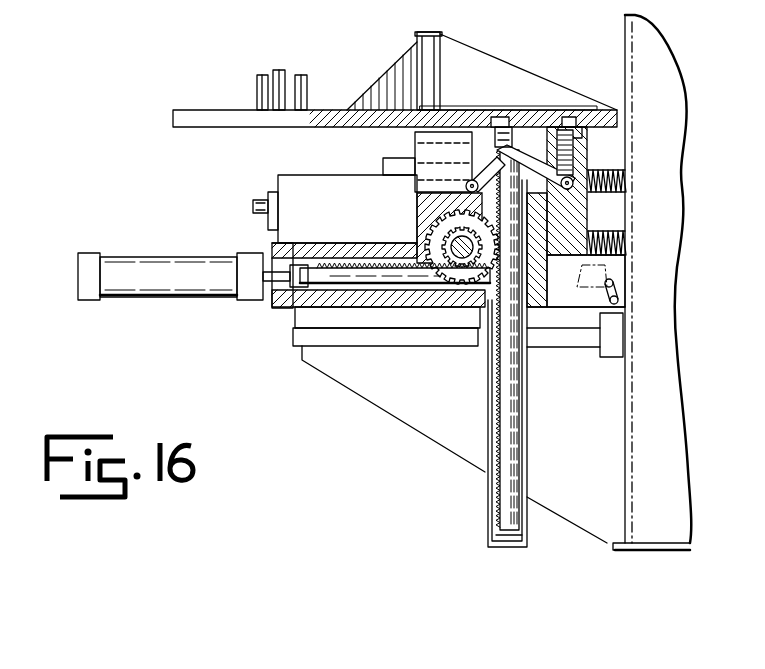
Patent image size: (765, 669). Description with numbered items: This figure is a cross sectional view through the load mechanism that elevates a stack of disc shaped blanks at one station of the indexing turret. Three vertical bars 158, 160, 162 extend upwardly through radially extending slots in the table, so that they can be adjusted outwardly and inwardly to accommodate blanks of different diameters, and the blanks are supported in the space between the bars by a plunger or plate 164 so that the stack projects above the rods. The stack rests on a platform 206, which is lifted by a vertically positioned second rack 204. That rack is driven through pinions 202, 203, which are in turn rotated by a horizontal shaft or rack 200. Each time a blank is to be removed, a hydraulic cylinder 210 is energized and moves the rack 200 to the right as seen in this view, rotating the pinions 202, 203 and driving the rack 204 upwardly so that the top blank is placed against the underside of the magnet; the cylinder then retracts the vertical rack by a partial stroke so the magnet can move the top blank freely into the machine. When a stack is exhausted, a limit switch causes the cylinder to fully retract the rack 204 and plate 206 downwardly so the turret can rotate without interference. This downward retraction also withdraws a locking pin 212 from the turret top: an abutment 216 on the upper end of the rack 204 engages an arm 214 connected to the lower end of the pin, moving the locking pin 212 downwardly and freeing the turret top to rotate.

The vertical bar 158 is at (303, 82).
The vertical bar 160 is at (282, 72).
The vertical bar 162 is at (257, 87).
The plunger or plate 164 is at (517, 110).
The shaft or rack 200 is at (396, 283).
The pinion 202 is at (422, 248).
The pinion 203 is at (425, 218).
The second rack 204 is at (510, 383).
The platform 206 is at (533, 110).
The hydraulic cylinder 210 is at (167, 262).
The locking pin 212 is at (573, 148).
The arm 214 is at (580, 220).
The abutment 216 is at (483, 130).